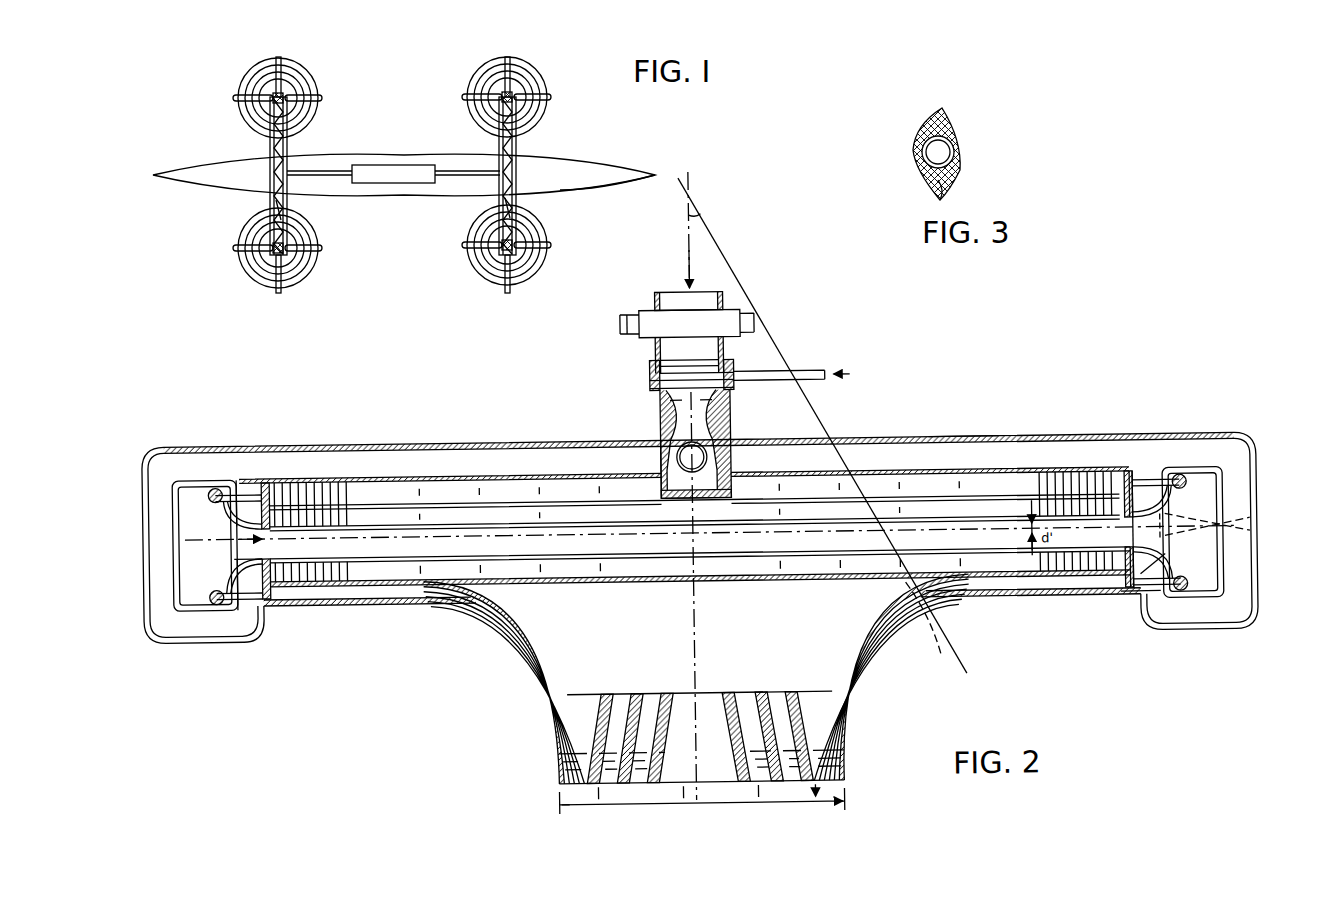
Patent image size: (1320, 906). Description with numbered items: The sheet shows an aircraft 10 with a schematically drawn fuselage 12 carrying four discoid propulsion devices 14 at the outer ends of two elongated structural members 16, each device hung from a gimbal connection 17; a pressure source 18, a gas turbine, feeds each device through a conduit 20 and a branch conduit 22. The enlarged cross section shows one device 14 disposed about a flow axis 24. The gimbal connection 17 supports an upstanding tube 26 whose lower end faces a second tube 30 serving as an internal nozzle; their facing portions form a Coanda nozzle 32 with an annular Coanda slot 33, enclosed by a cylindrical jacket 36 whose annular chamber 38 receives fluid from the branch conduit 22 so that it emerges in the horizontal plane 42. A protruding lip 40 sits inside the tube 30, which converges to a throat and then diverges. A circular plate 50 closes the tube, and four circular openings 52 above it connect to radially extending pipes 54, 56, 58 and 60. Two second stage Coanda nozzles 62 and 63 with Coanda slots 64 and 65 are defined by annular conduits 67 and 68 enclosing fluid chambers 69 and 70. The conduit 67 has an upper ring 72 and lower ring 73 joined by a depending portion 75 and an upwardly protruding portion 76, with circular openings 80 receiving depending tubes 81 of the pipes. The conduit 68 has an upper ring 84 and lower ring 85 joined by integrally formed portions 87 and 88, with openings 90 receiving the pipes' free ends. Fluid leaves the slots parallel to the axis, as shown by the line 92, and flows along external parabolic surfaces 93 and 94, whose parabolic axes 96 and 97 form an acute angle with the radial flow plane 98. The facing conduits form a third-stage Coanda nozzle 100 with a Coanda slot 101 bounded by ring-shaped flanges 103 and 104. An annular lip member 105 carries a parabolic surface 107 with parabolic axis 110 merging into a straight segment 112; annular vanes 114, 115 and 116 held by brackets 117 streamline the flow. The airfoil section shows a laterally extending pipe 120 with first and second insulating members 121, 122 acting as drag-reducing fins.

In FIG. 1, the aircraft 10 is at (652, 154).
In FIG. 1, the fuselage 12 is at (580, 190).
In FIG. 1, the propulsion device 14 is at (318, 72).
In FIG. 2, the propulsion device 14 is at (1116, 434).
In FIG. 1, the elongated structural member 16 is at (290, 153).
In FIG. 2, the elongated structural member 16 is at (630, 322).
In FIG. 1, the gimbal connection 17 is at (288, 98).
In FIG. 2, the gimbal connection 17 is at (740, 310).
In FIG. 1, the pressure source 18 is at (396, 165).
In FIG. 1, the conduit 20 is at (343, 176).
In FIG. 1, the branch conduit 22 is at (270, 212).
In FIG. 2, the branch conduit 22 is at (790, 372).
In FIG. 2, the flow axis 24 is at (697, 270).
In FIG. 2, the upstanding tube 26 is at (726, 300).
In FIG. 2, the second tube 30 is at (732, 440).
In FIG. 2, the Coanda nozzle 32 is at (738, 396).
In FIG. 2, the annular Coanda slot 33 is at (658, 355).
In FIG. 2, the cylindrical jacket 36 is at (655, 388).
In FIG. 2, the annular chamber 38 is at (652, 373).
In FIG. 2, the protruding lip 40 is at (692, 433).
In FIG. 2, the plane of emergence 42 is at (724, 358).
In FIG. 2, the circular plate 50 is at (662, 443).
In FIG. 2, the circular opening 52 is at (708, 470).
In FIG. 1, the radially extending pipe 54 is at (240, 96).
In FIG. 2, the radially extending pipe 54 is at (276, 473).
In FIG. 1, the radially extending pipe 56 is at (276, 60).
In FIG. 1, the radially extending pipe 58 is at (318, 100).
In FIG. 2, the radially extending pipe 58 is at (962, 440).
In FIG. 1, the radially extending pipe 60 is at (277, 293).
In FIG. 2, the second stage Coanda nozzle 62 is at (1188, 487).
In FIG. 2, the second stage Coanda nozzle 63 is at (1190, 590).
In FIG. 2, the Coanda slot 64 is at (1195, 492).
In FIG. 2, the Coanda slot 65 is at (1185, 587).
In FIG. 2, the annular conduit 67 is at (1120, 475).
In FIG. 2, the annular conduit 68 is at (1128, 594).
In FIG. 2, the fluid chamber 69 is at (1148, 480).
In FIG. 2, the fluid chamber 70 is at (1127, 575).
In FIG. 2, the upper ring 72 is at (212, 492).
In FIG. 2, the lower ring 73 is at (240, 522).
In FIG. 2, the depending portion 75 is at (262, 500).
In FIG. 2, the upwardly protruding portion 76 is at (278, 505).
In FIG. 2, the circular opening 80 is at (240, 475).
In FIG. 2, the depending tube 81 is at (263, 474).
In FIG. 2, the upper ring 84 is at (225, 580).
In FIG. 2, the lower ring 85 is at (212, 592).
In FIG. 2, the integrally formed portion 87 is at (258, 570).
In FIG. 2, the integrally formed portion 88 is at (300, 598).
In FIG. 2, the opening 90 is at (270, 602).
In FIG. 2, the line 92 is at (1180, 498).
In FIG. 2, the external parabolic surface 93 is at (1146, 524).
In FIG. 2, the external parabolic surface 94 is at (1138, 552).
In FIG. 2, the parabolic axis 96 is at (1222, 520).
In FIG. 2, the parabolic axis 97 is at (1222, 545).
In FIG. 2, the plane of radial flow 98 is at (868, 530).
In FIG. 2, the Coanda nozzle 100 is at (232, 557).
In FIG. 2, the Coanda slot 101 is at (235, 538).
In FIG. 2, the ring-shaped flange 103 is at (318, 530).
In FIG. 2, the ring-shaped flange 104 is at (305, 556).
In FIG. 2, the annular lip member 105 is at (860, 708).
In FIG. 2, the parabolic surface 107 is at (900, 600).
In FIG. 2, the parabolic axis 110 is at (942, 640).
In FIG. 2, the straight segment 112 is at (841, 775).
In FIG. 2, the annular vane 114 is at (572, 705).
In FIG. 2, the annular vane 115 is at (615, 718).
In FIG. 2, the annular vane 116 is at (648, 720).
In FIG. 2, the bracket 117 is at (600, 744).
In FIG. 3, the laterally extending pipe 120 is at (958, 150).
In FIG. 3, the first insulating member 121 is at (952, 122).
In FIG. 3, the second insulating member 122 is at (955, 182).